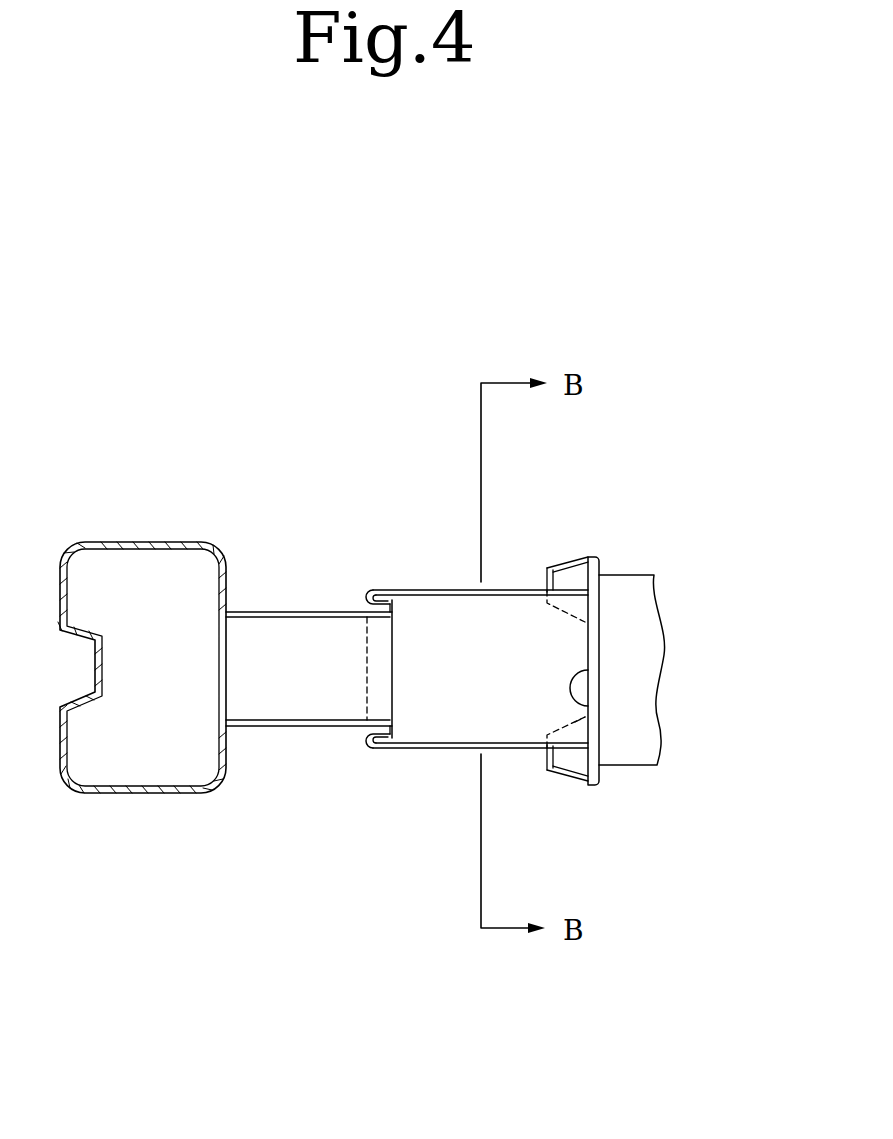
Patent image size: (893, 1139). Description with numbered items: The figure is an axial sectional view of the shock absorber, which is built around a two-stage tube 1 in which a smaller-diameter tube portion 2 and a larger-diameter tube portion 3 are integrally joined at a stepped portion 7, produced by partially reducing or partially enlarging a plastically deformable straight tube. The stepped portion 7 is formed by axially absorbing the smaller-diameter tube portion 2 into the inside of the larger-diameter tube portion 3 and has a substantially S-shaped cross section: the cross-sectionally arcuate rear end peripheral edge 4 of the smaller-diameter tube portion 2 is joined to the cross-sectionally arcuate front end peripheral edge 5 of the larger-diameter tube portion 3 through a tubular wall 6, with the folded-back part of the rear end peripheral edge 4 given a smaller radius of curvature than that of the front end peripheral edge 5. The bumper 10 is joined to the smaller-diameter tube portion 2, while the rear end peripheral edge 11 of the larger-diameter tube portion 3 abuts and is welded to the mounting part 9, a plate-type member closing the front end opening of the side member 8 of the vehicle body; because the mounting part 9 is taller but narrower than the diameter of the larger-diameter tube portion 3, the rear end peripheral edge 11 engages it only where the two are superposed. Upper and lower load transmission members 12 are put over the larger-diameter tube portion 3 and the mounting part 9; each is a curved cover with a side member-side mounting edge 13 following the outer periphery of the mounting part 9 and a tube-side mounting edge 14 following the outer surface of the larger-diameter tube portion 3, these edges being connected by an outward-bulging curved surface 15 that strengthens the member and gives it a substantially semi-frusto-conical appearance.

The two-stage tube 1 is at (356, 770).
The smaller-diameter tube portion 2 is at (304, 690).
The larger-diameter tube portion 3 is at (455, 700).
The rear end peripheral edge 4 is at (368, 608).
The front end peripheral edge 5 is at (367, 600).
The tubular wall 6 is at (384, 603).
The stepped portion 7 is at (445, 472).
The side member 8 is at (620, 632).
The mounting part 9 is at (600, 668).
The bumper 10 is at (145, 540).
The rear end peripheral edge 11 is at (600, 707).
The load transmission member 12 is at (695, 472).
The side member-side mounting edge 13 is at (590, 560).
The tube-side mounting edge 14 is at (545, 590).
The curved surface 15 is at (553, 572).